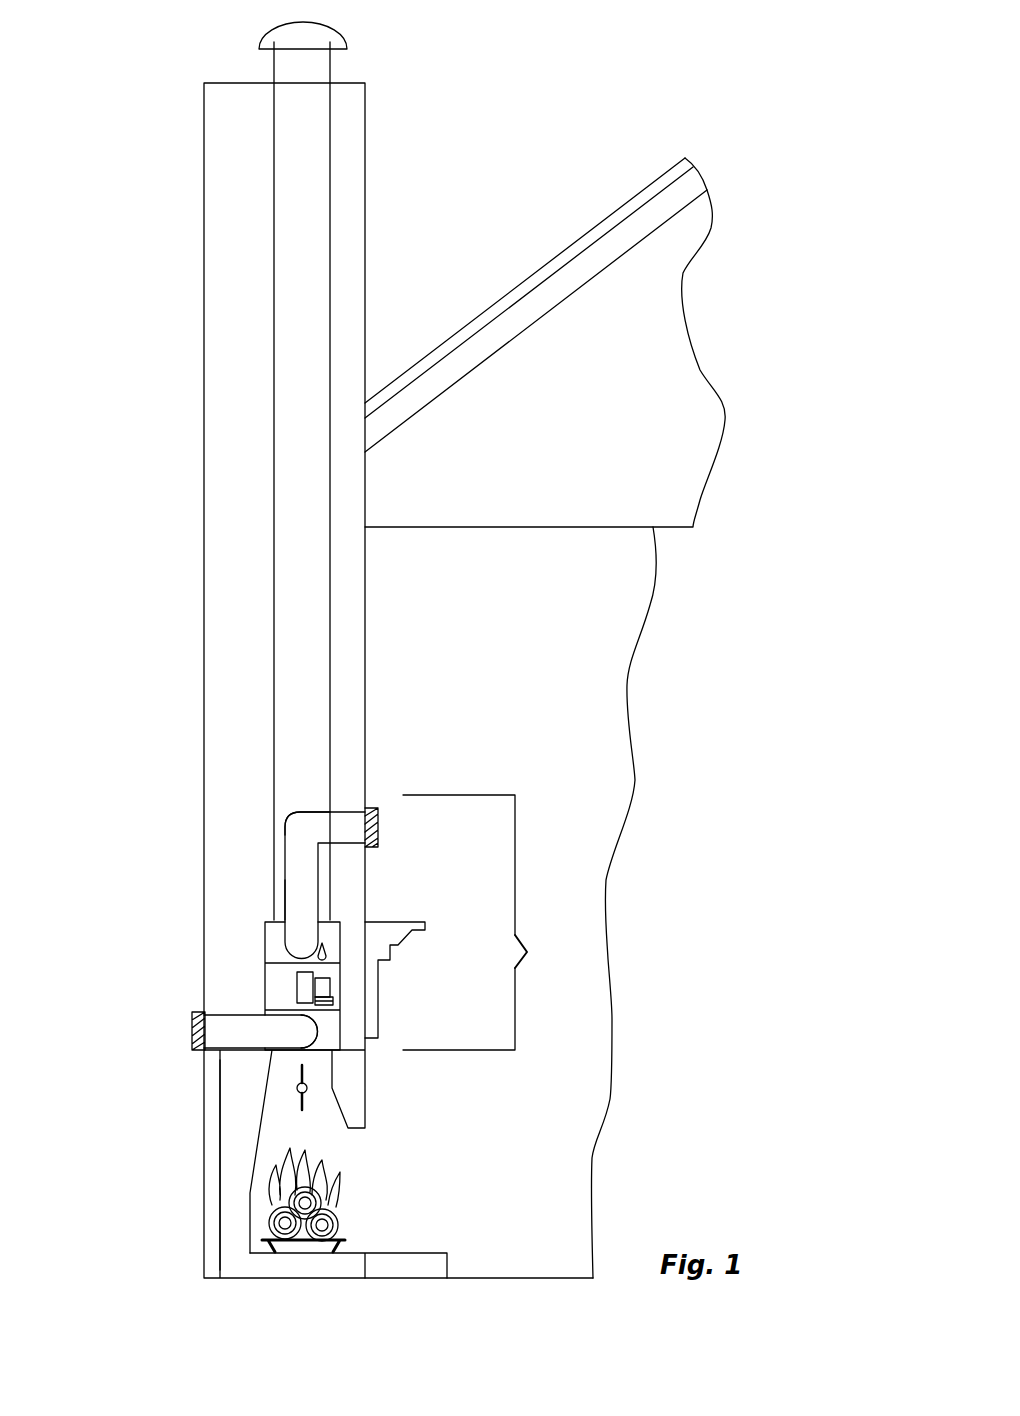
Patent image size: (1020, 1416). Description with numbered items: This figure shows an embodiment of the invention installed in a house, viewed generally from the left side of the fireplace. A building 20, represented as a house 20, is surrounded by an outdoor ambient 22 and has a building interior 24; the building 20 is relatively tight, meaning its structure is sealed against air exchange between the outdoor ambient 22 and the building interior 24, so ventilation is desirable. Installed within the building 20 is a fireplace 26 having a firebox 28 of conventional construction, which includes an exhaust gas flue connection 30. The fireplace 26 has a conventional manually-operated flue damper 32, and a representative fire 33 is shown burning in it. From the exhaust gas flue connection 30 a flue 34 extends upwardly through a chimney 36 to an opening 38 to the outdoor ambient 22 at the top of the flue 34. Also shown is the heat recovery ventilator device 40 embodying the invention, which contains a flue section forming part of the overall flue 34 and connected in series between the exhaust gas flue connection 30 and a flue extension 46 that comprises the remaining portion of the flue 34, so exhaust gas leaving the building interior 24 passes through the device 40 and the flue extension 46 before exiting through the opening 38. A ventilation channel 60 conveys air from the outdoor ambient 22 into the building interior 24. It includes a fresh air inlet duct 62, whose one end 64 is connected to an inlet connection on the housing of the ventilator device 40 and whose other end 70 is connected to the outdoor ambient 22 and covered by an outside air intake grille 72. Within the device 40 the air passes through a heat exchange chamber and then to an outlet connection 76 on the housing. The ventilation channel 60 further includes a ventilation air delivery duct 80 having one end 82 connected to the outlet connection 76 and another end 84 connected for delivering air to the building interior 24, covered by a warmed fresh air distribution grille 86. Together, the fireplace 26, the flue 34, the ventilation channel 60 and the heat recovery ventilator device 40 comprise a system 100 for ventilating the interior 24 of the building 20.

The building 20 is at (497, 302).
The outdoor ambient 22 is at (152, 790).
The building interior 24 is at (585, 848).
The fireplace 26 is at (400, 1115).
The firebox 28 is at (342, 1140).
The exhaust gas flue connection 30 is at (283, 905).
The flue damper 32 is at (298, 1102).
The fire 33 is at (333, 1177).
The flue 34 is at (344, 664).
The chimney 36 is at (204, 372).
The opening 38 is at (333, 32).
The heat recovery ventilator device 40 is at (358, 980).
The flue extension 46 is at (300, 590).
The ventilation channel 60 is at (542, 953).
The fresh air inlet duct 62 is at (236, 1028).
The end of the duct 64 is at (320, 1030).
The other end of the duct 70 is at (227, 1013).
The outside air intake grille 72 is at (192, 1018).
The outlet connection 76 is at (262, 947).
The ventilation air delivery duct 80 is at (305, 888).
The end of the duct 82 is at (306, 925).
The other end of the duct 84 is at (352, 811).
The warmed fresh air distribution grille 86 is at (375, 812).
The system 100 is at (570, 736).